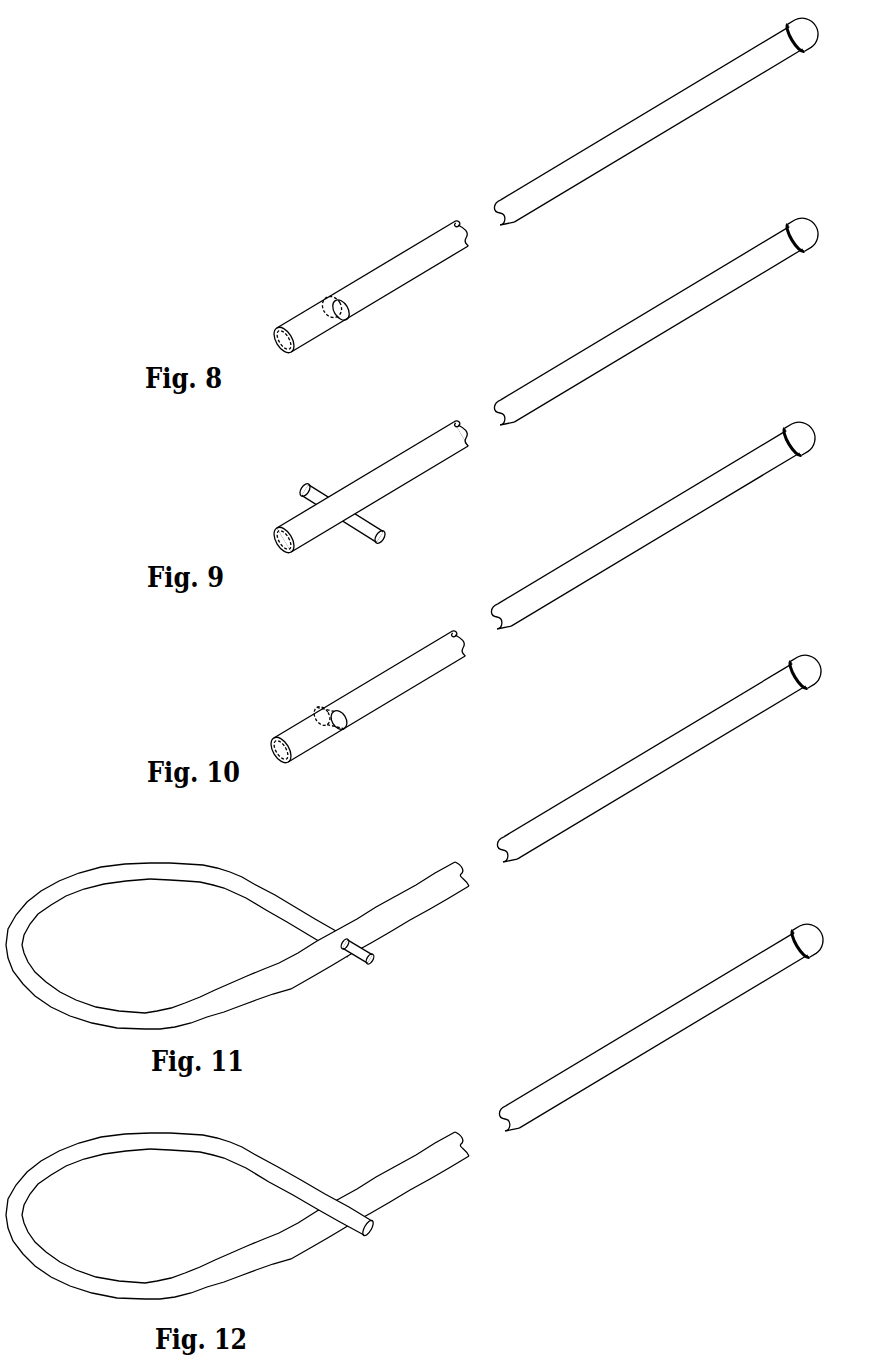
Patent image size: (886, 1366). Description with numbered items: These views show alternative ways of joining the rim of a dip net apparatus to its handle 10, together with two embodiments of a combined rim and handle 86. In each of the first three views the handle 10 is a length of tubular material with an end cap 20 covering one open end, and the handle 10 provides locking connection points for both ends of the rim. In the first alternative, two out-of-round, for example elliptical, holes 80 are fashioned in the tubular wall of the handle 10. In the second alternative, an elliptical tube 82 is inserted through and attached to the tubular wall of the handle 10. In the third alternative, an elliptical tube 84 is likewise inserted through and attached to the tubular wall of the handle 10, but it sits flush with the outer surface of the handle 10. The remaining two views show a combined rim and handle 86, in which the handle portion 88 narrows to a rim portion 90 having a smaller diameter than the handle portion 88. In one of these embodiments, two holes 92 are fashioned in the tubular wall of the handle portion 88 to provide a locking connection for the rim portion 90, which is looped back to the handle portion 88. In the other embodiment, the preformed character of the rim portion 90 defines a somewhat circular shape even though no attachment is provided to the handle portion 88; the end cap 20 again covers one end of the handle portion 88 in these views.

In FIG. 8, the handle 10 is at (608, 166).
In FIG. 9, the handle 10 is at (648, 329).
In FIG. 10, the handle 10 is at (645, 534).
In FIG. 8, the end cap 20 is at (810, 49).
In FIG. 9, the end cap 20 is at (830, 264).
In FIG. 10, the end cap 20 is at (827, 469).
In FIG. 11, the end cap 20 is at (833, 701).
In FIG. 12, the end cap 20 is at (834, 969).
In FIG. 8, the out-of-round holes 80 is at (343, 295).
In FIG. 9, the elliptical tube 82 is at (327, 491).
In FIG. 10, the elliptical tube 84 is at (335, 706).
In FIG. 11, the combined rim and handle 86 is at (763, 768).
In FIG. 12, the combined rim and handle 86 is at (757, 1047).
In FIG. 11, the handle portion 88 is at (651, 772).
In FIG. 12, the handle portion 88 is at (653, 1041).
In FIG. 11, the rim portion 90 is at (243, 868).
In FIG. 12, the rim portion 90 is at (237, 1183).
In FIG. 11, the holes 92 is at (390, 965).